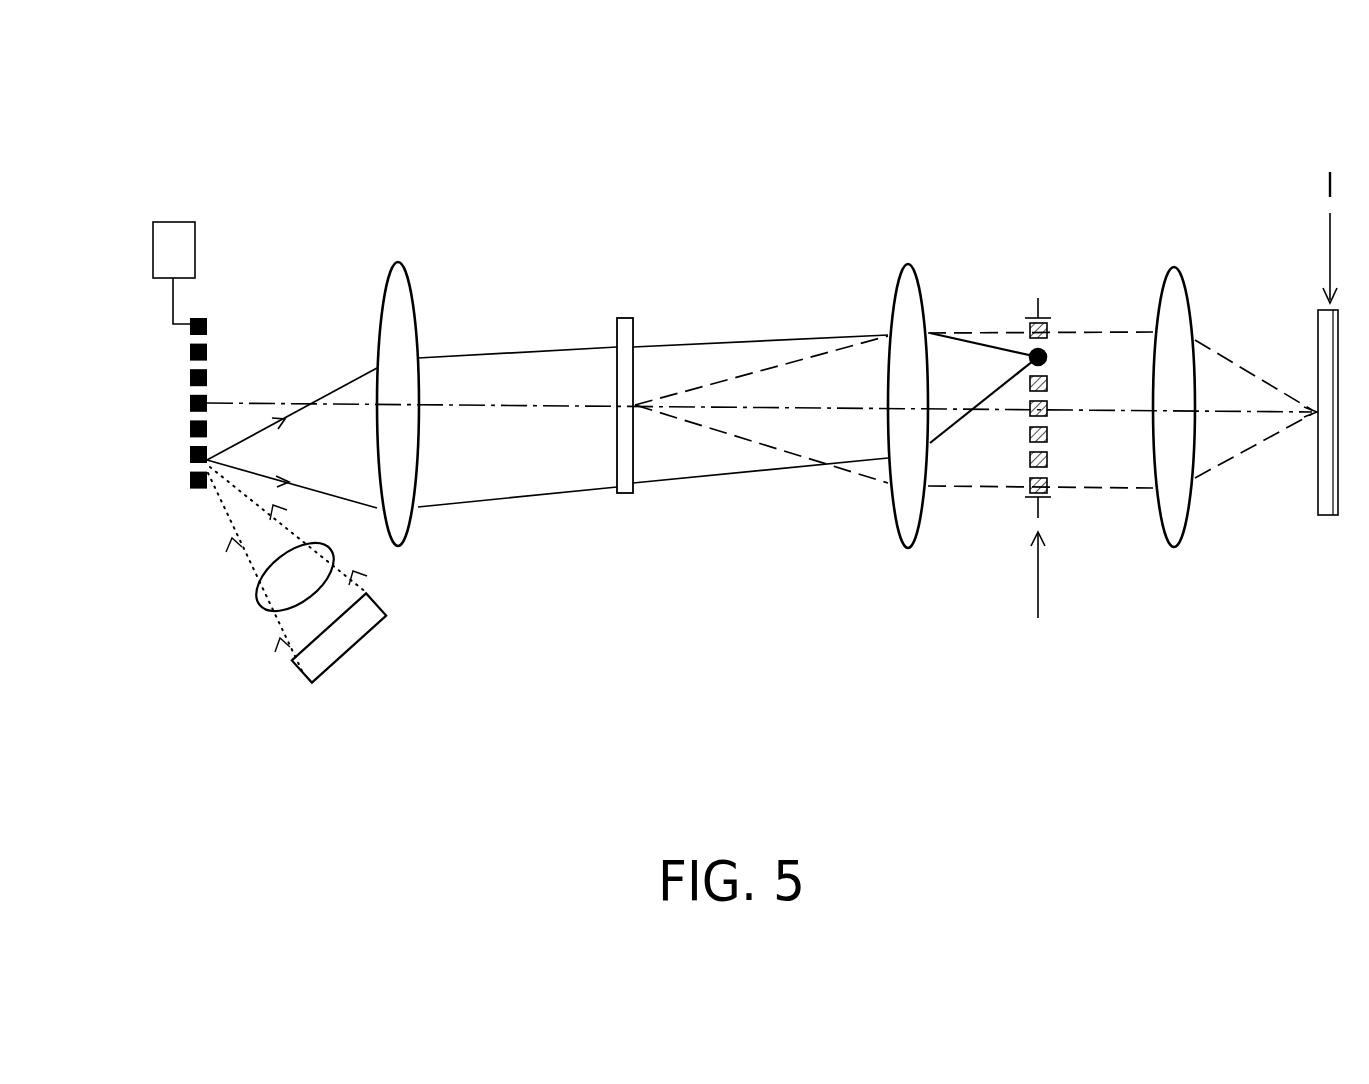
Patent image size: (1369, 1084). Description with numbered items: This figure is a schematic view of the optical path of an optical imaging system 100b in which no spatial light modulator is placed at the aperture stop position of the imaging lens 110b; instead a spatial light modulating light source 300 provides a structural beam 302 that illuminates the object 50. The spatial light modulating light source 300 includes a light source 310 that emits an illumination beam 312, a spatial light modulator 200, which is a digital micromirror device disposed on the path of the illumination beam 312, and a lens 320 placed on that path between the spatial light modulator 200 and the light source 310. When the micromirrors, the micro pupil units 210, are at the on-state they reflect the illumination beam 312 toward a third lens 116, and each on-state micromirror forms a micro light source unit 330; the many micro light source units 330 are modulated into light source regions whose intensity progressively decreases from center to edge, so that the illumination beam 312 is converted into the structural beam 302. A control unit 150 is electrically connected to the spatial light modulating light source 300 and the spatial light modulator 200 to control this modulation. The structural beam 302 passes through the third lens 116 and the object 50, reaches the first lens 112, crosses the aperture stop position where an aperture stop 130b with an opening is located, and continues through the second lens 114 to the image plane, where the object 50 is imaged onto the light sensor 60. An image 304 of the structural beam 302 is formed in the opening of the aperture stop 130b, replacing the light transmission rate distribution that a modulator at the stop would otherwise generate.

The optical imaging system 100b is at (1318, 768).
The control unit 150 is at (174, 222).
The spatial light modulator 200 is at (133, 536).
The micro pupil unit 210 is at (133, 398).
The micro light source unit 330 is at (176, 484).
The spatial light modulating light source 300 is at (291, 646).
The light source 310 is at (312, 660).
The lens 320 is at (267, 597).
The illumination beam 312 is at (370, 583).
The structural beam 302 is at (353, 377).
The object 50 is at (627, 493).
The imaging lens 110b is at (786, 531).
The third lens 116 is at (395, 525).
The first lens 112 is at (905, 510).
The second lens 114 is at (1163, 500).
The aperture stop 130b is at (1008, 412).
The image 304 is at (1018, 455).
The light sensor 60 is at (1328, 503).